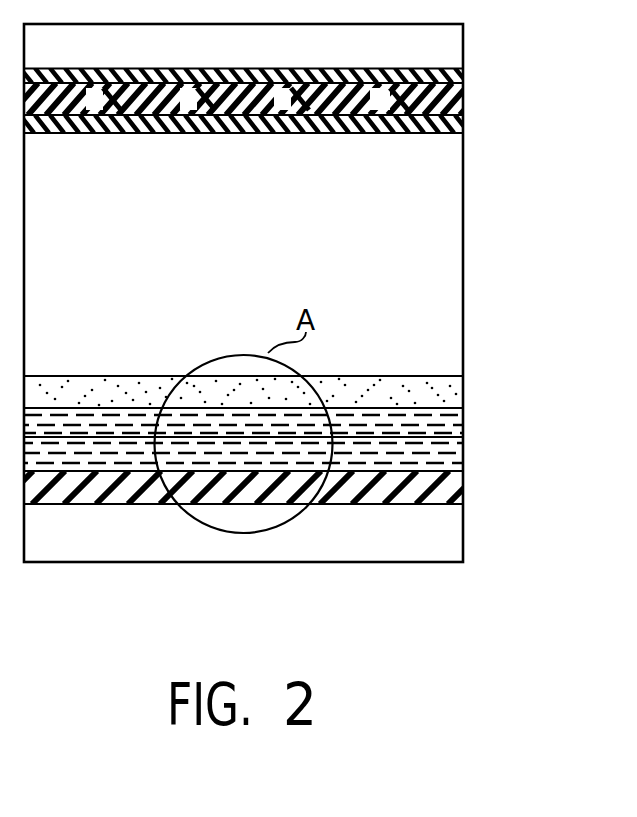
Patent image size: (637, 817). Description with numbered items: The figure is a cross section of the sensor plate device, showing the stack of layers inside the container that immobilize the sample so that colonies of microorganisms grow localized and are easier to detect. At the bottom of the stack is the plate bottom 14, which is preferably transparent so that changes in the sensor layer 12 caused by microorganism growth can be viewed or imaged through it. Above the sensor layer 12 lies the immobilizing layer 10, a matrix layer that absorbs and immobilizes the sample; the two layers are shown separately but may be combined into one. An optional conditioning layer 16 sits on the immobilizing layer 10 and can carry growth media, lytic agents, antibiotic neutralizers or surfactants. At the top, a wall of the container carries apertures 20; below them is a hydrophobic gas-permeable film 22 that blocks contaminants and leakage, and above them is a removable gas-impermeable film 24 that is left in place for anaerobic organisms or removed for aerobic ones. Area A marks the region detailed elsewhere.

The immobilizing layer 10 is at (420, 420).
The sensor layer 12 is at (463, 450).
The plate bottom 14 is at (427, 492).
The conditioning layer 16 is at (405, 392).
The apertures 20 is at (463, 100).
The hydrophobic gas-permeable film 22 is at (443, 130).
The gas-impermeable film 24 is at (463, 74).